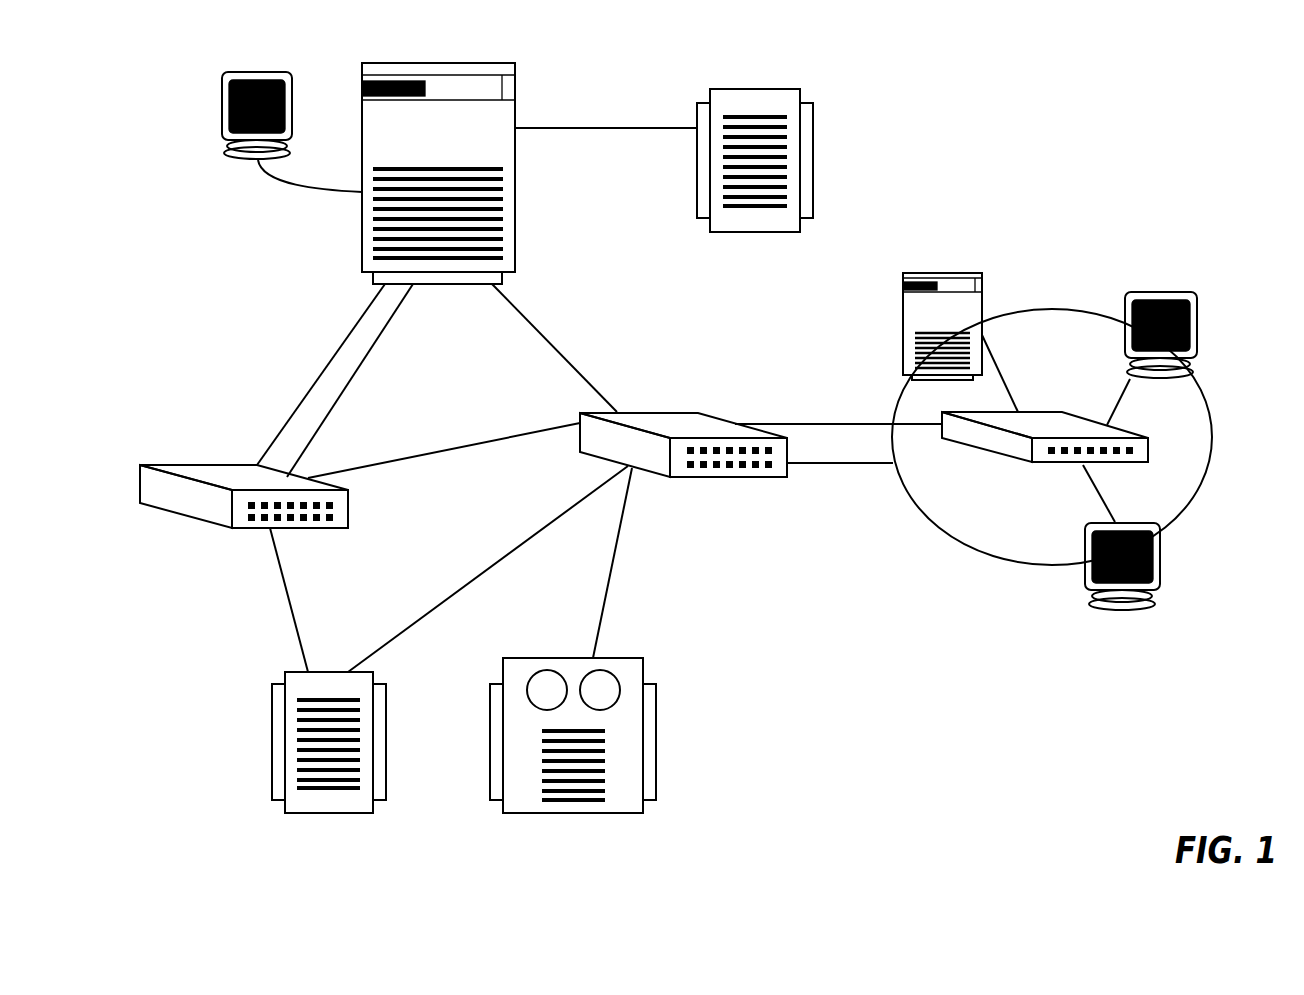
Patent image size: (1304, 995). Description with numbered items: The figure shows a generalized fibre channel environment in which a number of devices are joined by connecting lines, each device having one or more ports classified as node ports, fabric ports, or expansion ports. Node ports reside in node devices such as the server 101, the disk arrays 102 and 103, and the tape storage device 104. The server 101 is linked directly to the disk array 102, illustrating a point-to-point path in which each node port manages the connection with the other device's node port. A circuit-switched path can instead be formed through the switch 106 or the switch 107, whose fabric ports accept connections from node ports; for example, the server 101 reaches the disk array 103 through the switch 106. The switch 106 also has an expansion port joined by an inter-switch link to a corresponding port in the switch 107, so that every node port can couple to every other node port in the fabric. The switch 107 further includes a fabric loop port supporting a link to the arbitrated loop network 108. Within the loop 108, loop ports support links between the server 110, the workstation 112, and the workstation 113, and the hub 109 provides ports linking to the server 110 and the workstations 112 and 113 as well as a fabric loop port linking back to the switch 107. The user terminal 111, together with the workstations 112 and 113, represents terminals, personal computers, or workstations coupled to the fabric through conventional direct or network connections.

The server 101 is at (465, 73).
The disk array 102 is at (788, 100).
The disk array 103 is at (310, 800).
The tape storage device 104 is at (631, 668).
The switch 106 is at (218, 480).
The switch 107 is at (697, 427).
The arbitrated loop network 108 is at (1137, 228).
The hub 109 is at (993, 438).
The server 110 is at (955, 283).
The user terminal 111 is at (258, 75).
The workstation 112 is at (1188, 300).
The workstation 113 is at (1122, 617).